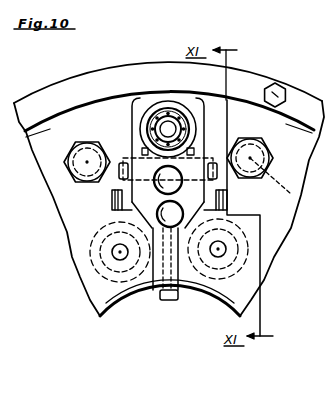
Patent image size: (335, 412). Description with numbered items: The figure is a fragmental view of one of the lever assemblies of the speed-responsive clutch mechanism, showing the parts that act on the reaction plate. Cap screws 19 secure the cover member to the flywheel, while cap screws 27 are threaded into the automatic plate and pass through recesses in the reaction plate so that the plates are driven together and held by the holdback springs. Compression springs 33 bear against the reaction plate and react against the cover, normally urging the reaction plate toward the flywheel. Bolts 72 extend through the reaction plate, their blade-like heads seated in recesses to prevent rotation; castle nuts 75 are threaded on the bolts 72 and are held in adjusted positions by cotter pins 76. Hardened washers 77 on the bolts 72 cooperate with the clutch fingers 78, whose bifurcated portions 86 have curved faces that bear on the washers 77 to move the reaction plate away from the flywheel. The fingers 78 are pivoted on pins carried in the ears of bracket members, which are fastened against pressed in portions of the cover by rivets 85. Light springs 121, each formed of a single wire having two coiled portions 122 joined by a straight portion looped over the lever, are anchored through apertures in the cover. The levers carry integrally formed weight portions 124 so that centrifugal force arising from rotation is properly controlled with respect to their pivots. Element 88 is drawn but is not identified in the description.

The cap screw 19 is at (280, 91).
The cap screw 27 is at (295, 207).
The compression spring 33 is at (218, 279).
The bolt 72 is at (168, 122).
The castle nut 75 is at (156, 108).
The cotter pin 76 is at (192, 128).
The hardened washer 77 is at (197, 147).
The clutch finger 78 is at (172, 300).
The rivet 85 is at (166, 226).
The bifurcated portion 86 is at (180, 110).
The bearing housing 88 is at (143, 113).
The light spring 121 is at (95, 238).
The coiled portion 122 is at (112, 205).
The weight portion 124 is at (127, 157).